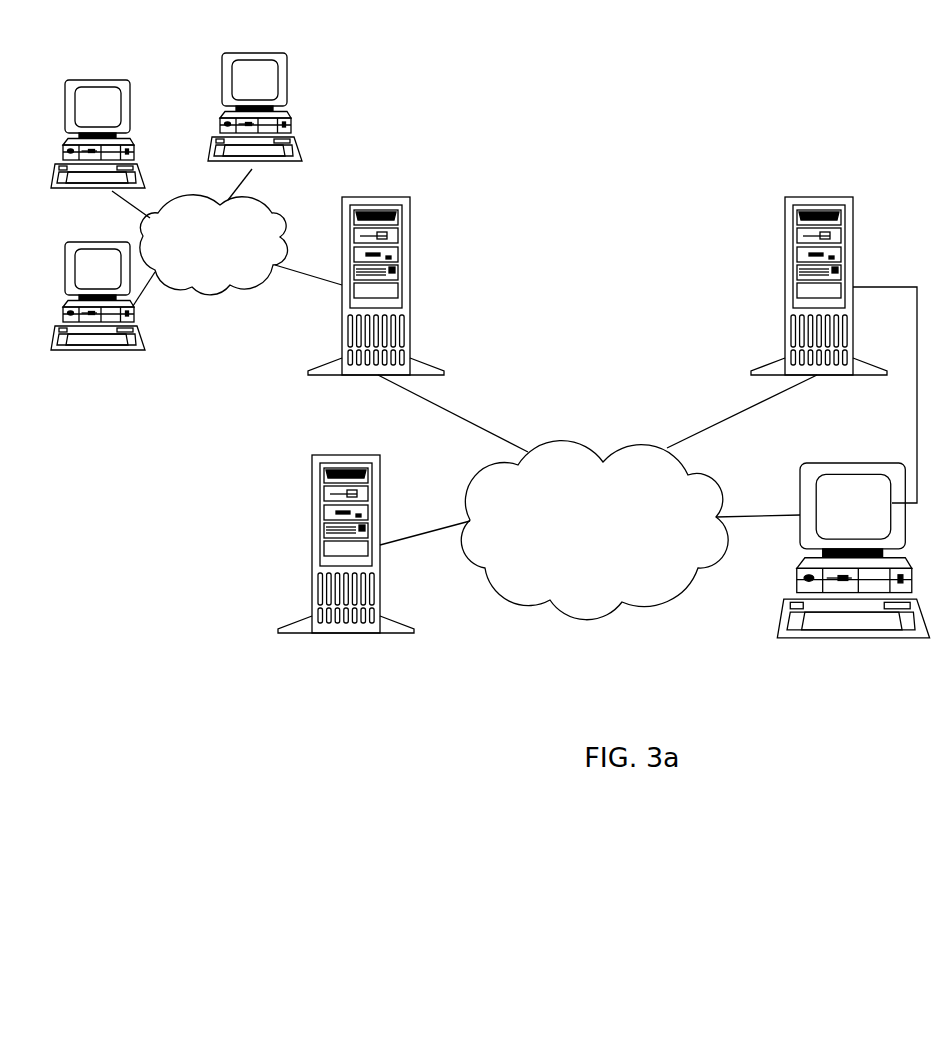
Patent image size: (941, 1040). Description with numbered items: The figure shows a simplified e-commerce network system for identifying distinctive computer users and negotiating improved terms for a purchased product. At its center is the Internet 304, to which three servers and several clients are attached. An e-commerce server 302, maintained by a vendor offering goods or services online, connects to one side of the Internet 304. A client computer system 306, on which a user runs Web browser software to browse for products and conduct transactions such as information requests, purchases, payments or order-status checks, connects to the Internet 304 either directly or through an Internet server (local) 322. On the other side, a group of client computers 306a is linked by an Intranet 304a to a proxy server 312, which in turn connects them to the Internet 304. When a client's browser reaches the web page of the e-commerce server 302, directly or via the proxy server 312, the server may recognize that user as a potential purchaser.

The client computers 306a is at (176, 186).
The Intranet 304a is at (214, 245).
The proxy server 312 is at (370, 324).
The Internet 304 is at (594, 530).
The Internet server (local) 322 is at (784, 350).
The e-commerce server 302 is at (363, 568).
The client computer system 306 is at (823, 597).